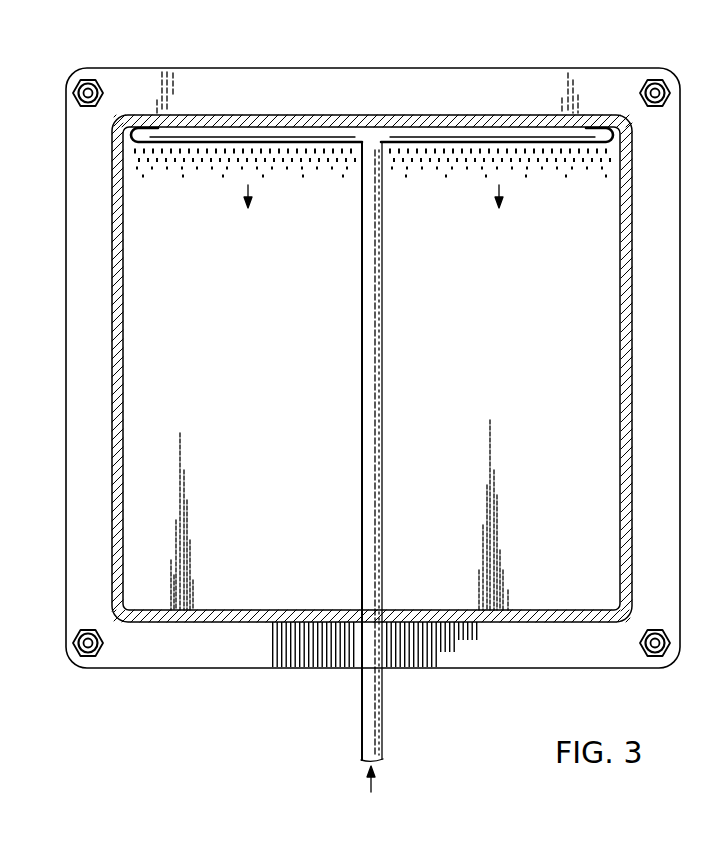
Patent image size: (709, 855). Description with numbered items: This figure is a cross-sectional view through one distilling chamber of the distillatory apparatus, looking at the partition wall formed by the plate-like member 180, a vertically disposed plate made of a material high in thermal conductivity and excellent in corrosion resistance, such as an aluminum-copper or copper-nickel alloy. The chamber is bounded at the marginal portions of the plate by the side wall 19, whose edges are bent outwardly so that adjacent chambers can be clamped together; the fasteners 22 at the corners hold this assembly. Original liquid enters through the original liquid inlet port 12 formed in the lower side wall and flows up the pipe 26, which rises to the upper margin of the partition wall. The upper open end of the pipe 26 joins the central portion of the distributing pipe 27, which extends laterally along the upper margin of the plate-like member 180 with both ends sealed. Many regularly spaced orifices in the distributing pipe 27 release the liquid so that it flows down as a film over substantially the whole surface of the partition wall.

The original liquid inlet port 12 is at (383, 713).
The side wall 19 is at (278, 125).
The fastening nuts 22 is at (93, 78).
The pipe 26 is at (377, 417).
The distributing pipe 27 is at (458, 135).
The plate-like member 180 is at (278, 562).